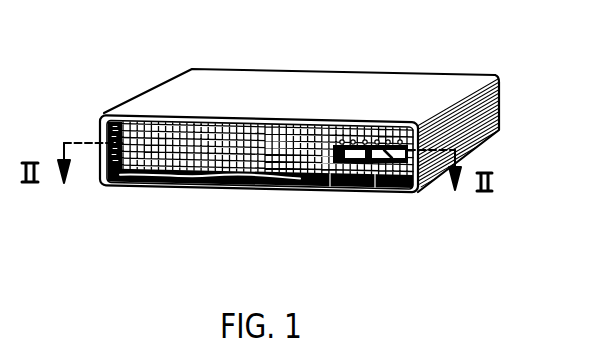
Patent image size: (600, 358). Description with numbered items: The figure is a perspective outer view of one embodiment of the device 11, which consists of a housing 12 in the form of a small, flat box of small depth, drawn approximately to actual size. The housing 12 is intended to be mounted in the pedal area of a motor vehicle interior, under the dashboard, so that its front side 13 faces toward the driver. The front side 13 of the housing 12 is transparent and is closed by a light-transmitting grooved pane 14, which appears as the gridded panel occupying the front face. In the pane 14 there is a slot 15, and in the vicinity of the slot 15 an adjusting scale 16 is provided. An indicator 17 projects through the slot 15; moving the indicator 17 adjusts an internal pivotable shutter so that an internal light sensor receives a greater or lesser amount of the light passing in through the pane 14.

The device 11 is at (497, 62).
The housing 12 is at (390, 95).
The front side 13 is at (205, 183).
The grooved pane 14 is at (283, 160).
The slot 15 is at (405, 160).
The adjusting scale 16 is at (361, 140).
The indicator 17 is at (375, 160).